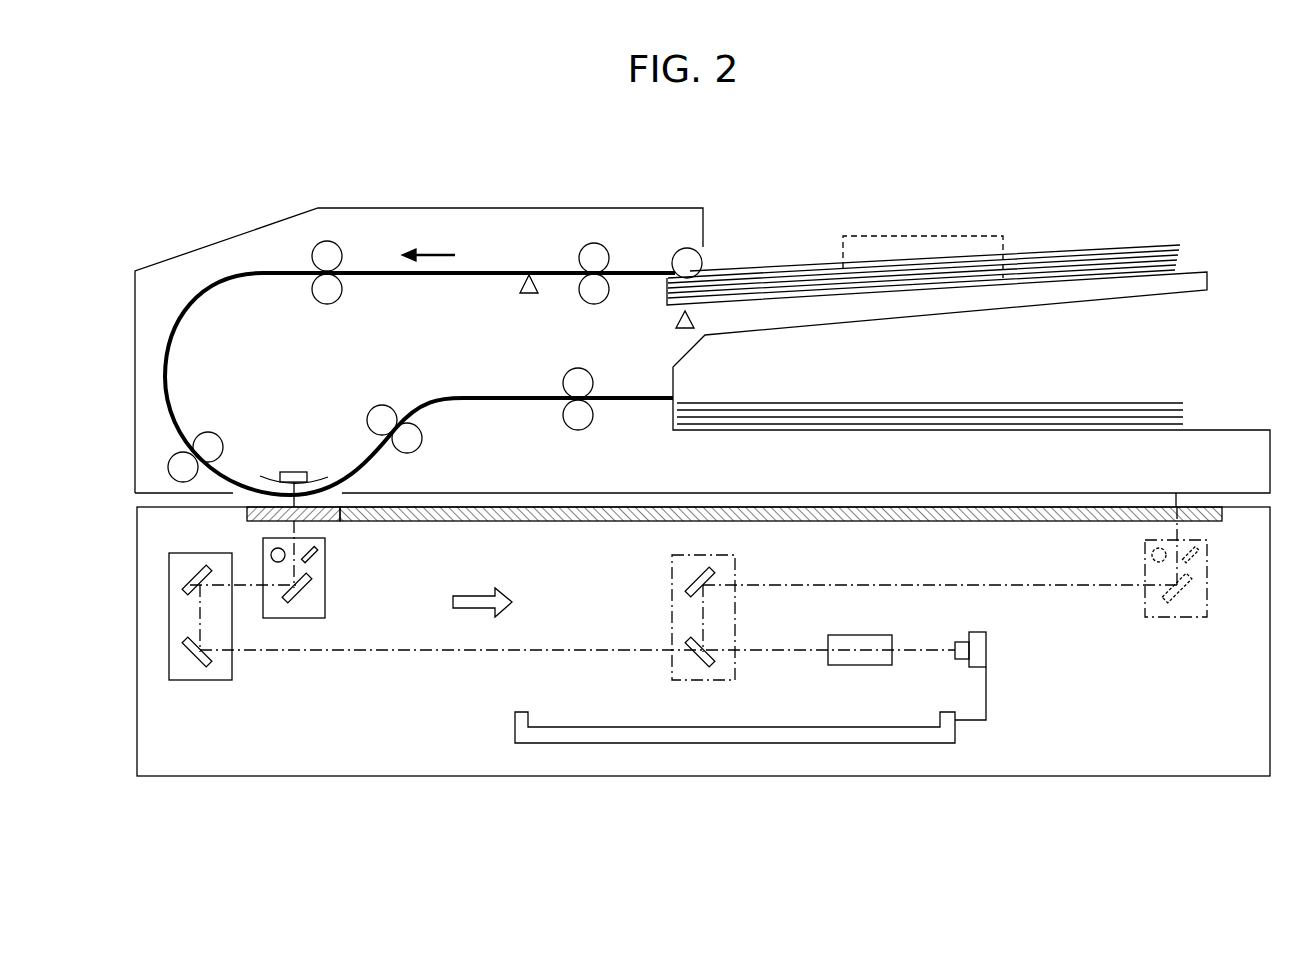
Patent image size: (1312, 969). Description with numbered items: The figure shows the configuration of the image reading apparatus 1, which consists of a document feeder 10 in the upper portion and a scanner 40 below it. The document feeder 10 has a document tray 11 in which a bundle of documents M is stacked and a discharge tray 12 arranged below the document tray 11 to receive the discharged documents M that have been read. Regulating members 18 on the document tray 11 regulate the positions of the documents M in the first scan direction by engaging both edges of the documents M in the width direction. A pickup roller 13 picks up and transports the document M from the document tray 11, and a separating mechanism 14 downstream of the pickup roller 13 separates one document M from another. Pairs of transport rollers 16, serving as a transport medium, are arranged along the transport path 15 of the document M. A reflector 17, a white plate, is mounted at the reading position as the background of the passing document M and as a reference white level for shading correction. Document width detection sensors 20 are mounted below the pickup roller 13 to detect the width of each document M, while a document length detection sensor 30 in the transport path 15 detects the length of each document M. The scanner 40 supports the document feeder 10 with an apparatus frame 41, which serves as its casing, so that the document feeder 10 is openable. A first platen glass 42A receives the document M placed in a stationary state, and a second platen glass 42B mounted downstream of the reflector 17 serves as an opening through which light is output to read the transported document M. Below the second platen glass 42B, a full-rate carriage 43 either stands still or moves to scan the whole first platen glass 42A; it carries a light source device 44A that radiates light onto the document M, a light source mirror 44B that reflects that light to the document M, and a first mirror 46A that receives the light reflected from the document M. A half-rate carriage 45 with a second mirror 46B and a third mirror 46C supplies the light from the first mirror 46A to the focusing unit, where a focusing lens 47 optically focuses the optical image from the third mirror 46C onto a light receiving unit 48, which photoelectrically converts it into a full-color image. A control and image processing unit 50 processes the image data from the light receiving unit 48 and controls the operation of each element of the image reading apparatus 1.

The image reading apparatus 1 is at (147, 135).
The document feeder 10 is at (1130, 213).
The document tray 11 is at (1020, 306).
The discharge tray 12 is at (1233, 430).
The pickup roller 13 is at (703, 260).
The separating mechanism 14 is at (597, 243).
The transport path 15 is at (500, 272).
The transport rollers 16 is at (327, 240).
The reflector 17 is at (292, 470).
The regulating members 18 is at (907, 236).
The document M is at (1068, 250).
The document width detection sensors 20 is at (675, 320).
The document length detection sensor 30 is at (529, 294).
The scanner 40 is at (1190, 822).
The apparatus frame 41 is at (982, 778).
The first platen glass 42A is at (955, 522).
The second platen glass 42B is at (330, 522).
The full-rate carriage 43 is at (326, 605).
The light source device 44A is at (271, 552).
The light source mirror 44B is at (318, 556).
The half-rate carriage 45 is at (233, 668).
The first mirror 46A is at (298, 596).
The second mirror 46B is at (189, 578).
The third mirror 46C is at (193, 661).
The focusing lens 47 is at (860, 667).
The light receiving unit 48 is at (988, 650).
The control and image processing unit 50 is at (735, 745).